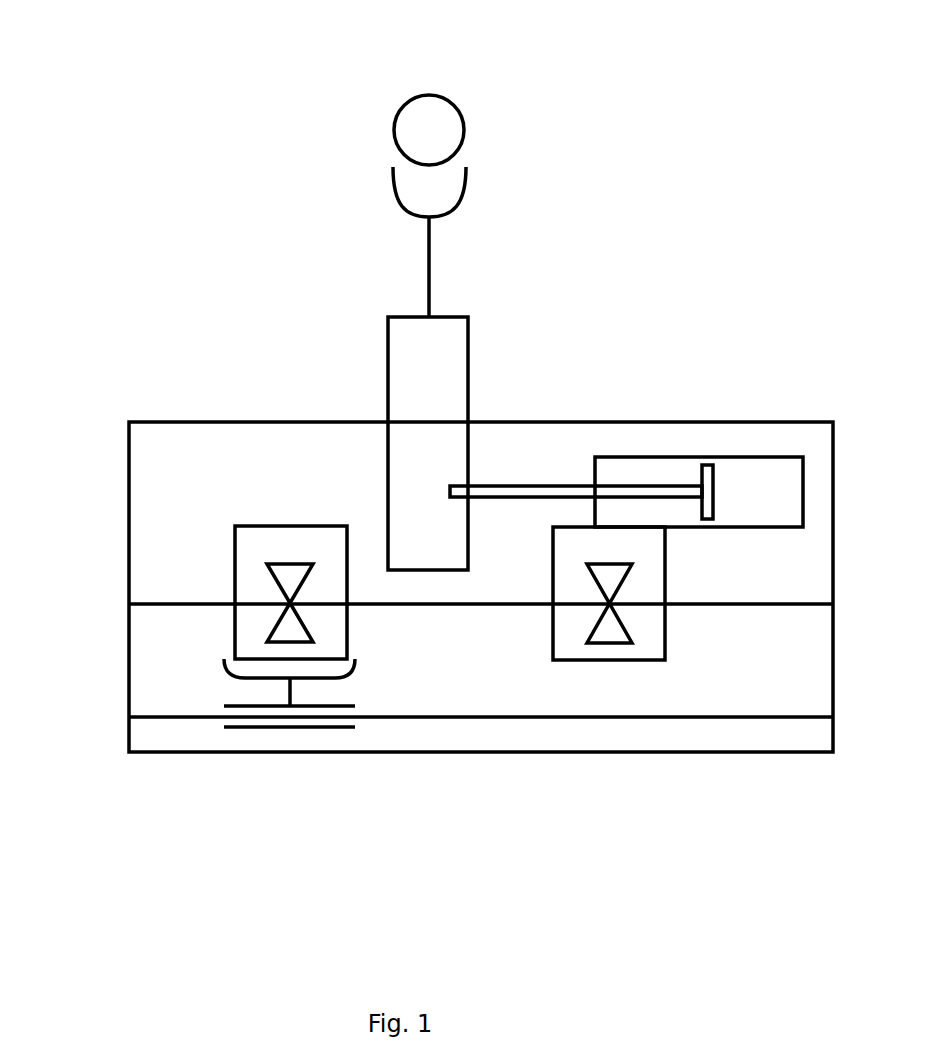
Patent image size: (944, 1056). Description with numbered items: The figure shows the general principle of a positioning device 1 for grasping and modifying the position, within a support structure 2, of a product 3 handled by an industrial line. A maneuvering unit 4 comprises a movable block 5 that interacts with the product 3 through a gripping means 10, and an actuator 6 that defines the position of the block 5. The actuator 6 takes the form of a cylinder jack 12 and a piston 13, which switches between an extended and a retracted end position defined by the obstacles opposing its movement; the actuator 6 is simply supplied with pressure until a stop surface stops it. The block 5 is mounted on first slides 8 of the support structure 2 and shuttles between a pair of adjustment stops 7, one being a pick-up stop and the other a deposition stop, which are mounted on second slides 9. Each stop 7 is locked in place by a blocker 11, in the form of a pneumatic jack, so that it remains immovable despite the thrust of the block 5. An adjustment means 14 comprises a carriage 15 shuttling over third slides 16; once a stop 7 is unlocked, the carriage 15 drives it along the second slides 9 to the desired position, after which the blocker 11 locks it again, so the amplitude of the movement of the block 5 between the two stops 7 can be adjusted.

The positioning device 1 is at (715, 187).
The support structure 2 is at (118, 813).
The product 3 is at (465, 98).
The maneuvering unit 4 is at (209, 325).
The block 5 is at (445, 375).
The actuator 6 is at (685, 440).
The adjustment stop 7 is at (355, 633).
The first slides 8 is at (181, 408).
The second slides 9 is at (160, 595).
The gripping means 10 is at (372, 185).
The blocker 11 is at (290, 622).
The cylinder jack 12 is at (795, 450).
The piston 13 is at (542, 473).
The adjustment means 14 is at (160, 657).
The carriage 15 is at (295, 732).
The third slides 16 is at (772, 723).